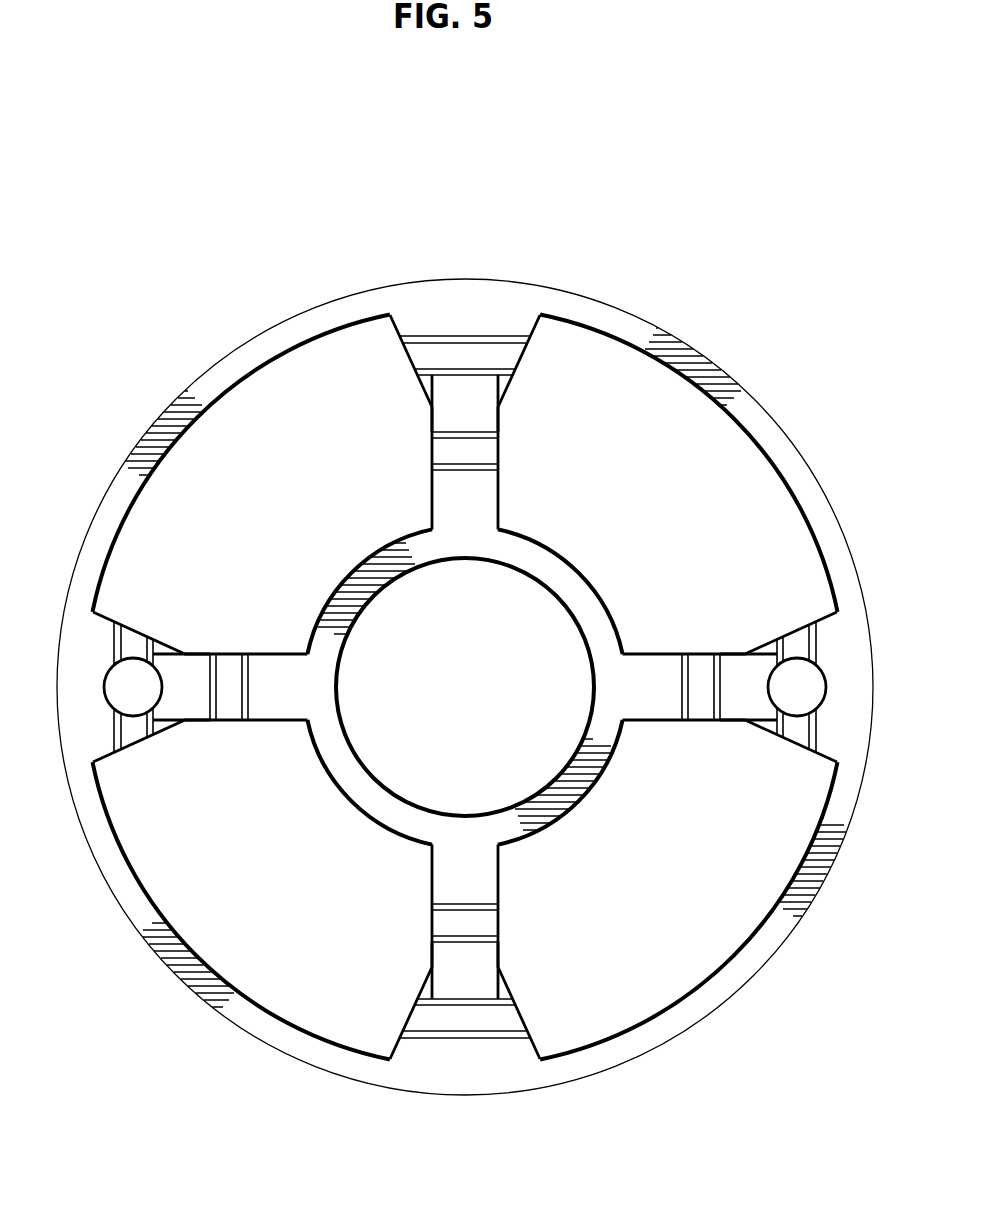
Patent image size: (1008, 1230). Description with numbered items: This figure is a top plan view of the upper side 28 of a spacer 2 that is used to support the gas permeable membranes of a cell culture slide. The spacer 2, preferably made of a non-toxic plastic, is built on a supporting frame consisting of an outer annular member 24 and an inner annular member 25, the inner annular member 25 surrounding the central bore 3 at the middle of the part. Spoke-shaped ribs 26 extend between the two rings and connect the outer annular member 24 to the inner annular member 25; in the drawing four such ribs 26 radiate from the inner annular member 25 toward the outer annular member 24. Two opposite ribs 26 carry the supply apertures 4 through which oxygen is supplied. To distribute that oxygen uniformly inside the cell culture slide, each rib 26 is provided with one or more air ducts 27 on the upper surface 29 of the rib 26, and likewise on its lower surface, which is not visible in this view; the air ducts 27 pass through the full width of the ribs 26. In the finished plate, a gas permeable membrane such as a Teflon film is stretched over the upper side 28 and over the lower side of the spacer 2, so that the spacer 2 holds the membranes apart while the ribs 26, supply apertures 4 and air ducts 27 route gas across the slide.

The spacer 2 is at (456, 210).
The central bore 3 is at (548, 628).
The supply apertures 4 is at (125, 680).
The outer annular member 24 is at (737, 397).
The inner annular member 25 is at (392, 543).
The spoke-shaped ribs 26 is at (513, 383).
The air ducts 27 is at (422, 345).
The upper side 28 is at (207, 1024).
The upper surface 29 is at (478, 414).